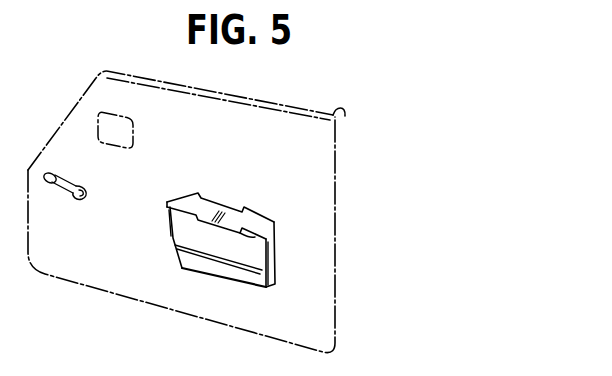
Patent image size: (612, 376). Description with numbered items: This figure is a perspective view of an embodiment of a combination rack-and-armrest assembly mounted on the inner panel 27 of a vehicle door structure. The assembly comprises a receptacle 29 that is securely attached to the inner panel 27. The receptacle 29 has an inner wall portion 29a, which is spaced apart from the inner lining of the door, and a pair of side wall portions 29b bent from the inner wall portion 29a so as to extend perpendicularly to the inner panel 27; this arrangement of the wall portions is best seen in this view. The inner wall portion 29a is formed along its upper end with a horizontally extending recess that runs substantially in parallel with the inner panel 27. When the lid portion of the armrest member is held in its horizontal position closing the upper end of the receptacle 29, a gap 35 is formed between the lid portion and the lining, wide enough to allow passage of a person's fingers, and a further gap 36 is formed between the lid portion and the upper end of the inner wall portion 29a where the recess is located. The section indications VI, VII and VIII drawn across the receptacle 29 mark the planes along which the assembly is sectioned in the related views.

The inner panel 27 is at (337, 143).
The receptacle 29 is at (173, 268).
The inner wall portion 29a is at (220, 253).
The side wall portions 29b is at (172, 242).
The gap 35 is at (233, 208).
The gap 36 is at (247, 237).
The section line VI- VI is at (218, 193).
The section line VII- VII is at (262, 200).
The section line VIII- VIII is at (200, 178).